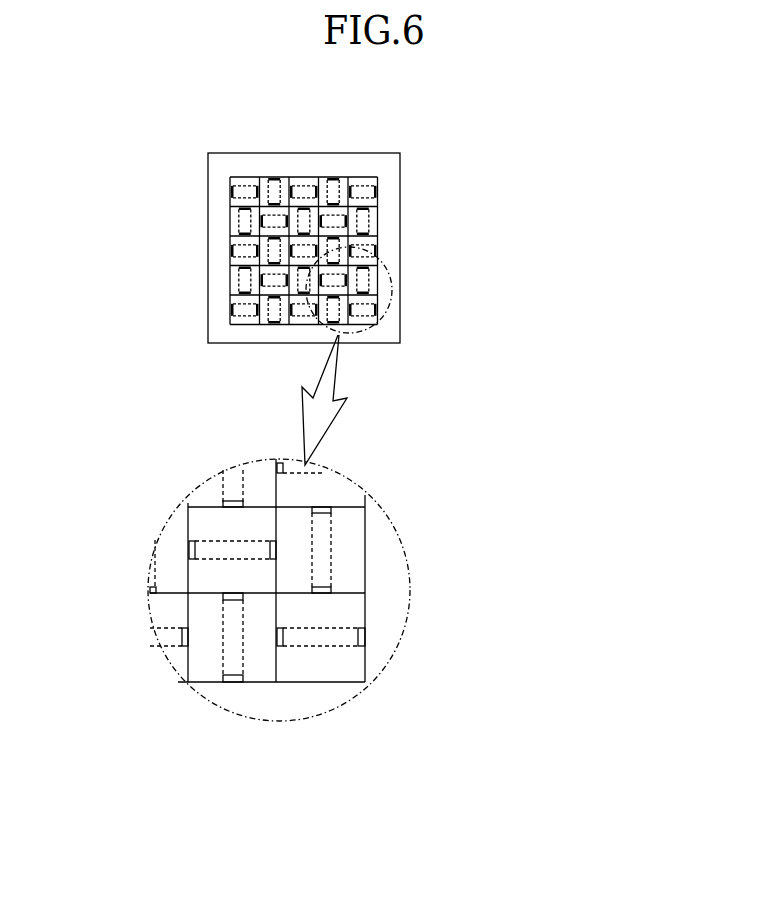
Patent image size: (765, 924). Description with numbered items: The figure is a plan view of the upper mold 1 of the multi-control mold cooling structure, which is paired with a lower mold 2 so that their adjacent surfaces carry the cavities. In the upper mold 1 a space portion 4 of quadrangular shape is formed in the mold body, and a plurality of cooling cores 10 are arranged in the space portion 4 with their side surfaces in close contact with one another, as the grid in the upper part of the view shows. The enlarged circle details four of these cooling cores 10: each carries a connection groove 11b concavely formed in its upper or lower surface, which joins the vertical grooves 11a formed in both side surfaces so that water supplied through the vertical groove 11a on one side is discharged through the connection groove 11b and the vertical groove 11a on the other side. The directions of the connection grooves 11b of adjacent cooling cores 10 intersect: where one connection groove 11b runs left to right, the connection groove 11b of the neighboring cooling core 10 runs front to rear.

The upper mold 1 is at (403, 248).
The lower mold 2 is at (400, 214).
The space portion 4 is at (247, 488).
The cooling core 10 is at (230, 243).
The vertical groove 11a is at (365, 637).
The connection groove 11b is at (217, 541).